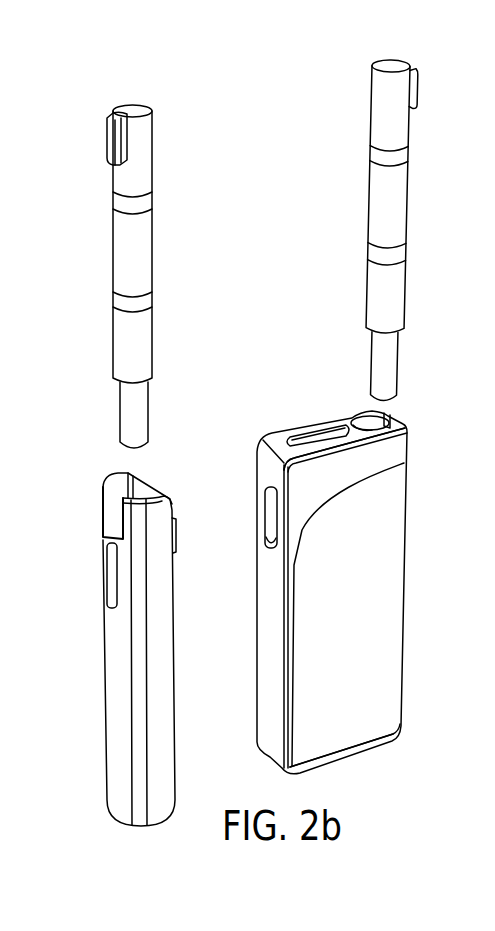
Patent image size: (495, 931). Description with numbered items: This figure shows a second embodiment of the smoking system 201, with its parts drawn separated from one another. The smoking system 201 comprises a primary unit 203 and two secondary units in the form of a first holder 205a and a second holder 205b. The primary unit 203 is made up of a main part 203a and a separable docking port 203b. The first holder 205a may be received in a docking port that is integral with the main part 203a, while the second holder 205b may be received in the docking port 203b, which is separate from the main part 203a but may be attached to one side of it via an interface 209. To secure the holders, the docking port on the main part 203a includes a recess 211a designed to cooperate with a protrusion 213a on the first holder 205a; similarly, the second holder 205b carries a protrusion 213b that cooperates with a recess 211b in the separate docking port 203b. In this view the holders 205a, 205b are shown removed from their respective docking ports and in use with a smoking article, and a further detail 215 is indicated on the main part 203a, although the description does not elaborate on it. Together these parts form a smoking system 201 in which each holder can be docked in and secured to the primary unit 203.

The smoking system 201 is at (241, 103).
The primary unit 203 is at (369, 762).
The main part 203a is at (385, 610).
The docking port 203b is at (125, 782).
The first holder 205a is at (394, 207).
The second holder 205b is at (125, 248).
The interface 209 is at (265, 503).
The recess 211a is at (407, 426).
The recess 211b is at (104, 505).
The protrusion 213a is at (410, 66).
The protrusion 213b is at (110, 130).
The rim 215 is at (393, 451).